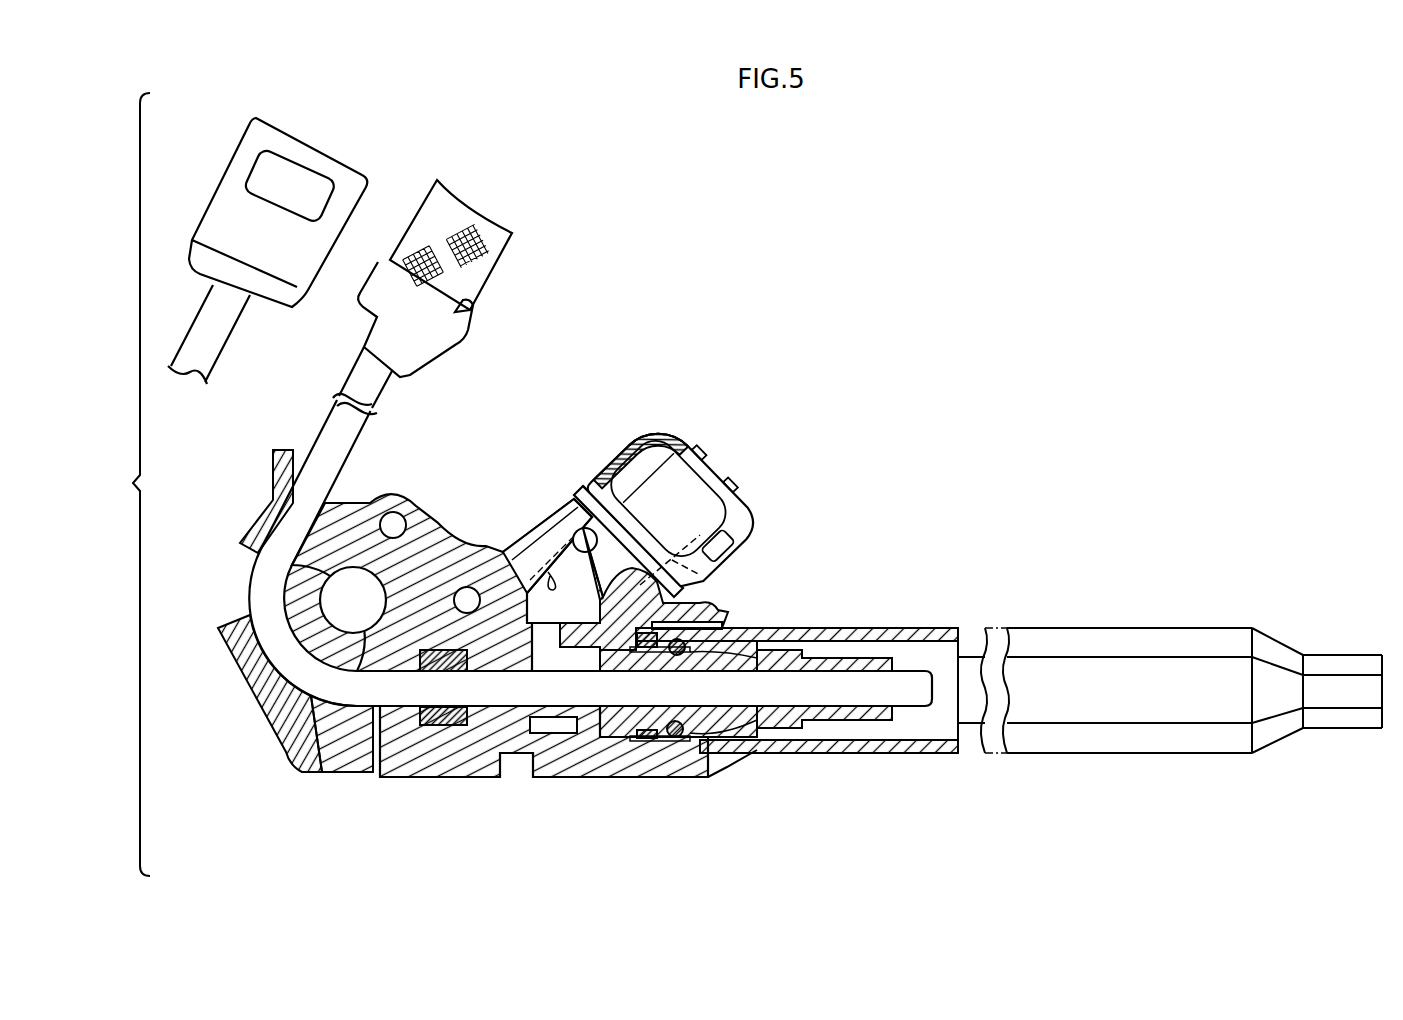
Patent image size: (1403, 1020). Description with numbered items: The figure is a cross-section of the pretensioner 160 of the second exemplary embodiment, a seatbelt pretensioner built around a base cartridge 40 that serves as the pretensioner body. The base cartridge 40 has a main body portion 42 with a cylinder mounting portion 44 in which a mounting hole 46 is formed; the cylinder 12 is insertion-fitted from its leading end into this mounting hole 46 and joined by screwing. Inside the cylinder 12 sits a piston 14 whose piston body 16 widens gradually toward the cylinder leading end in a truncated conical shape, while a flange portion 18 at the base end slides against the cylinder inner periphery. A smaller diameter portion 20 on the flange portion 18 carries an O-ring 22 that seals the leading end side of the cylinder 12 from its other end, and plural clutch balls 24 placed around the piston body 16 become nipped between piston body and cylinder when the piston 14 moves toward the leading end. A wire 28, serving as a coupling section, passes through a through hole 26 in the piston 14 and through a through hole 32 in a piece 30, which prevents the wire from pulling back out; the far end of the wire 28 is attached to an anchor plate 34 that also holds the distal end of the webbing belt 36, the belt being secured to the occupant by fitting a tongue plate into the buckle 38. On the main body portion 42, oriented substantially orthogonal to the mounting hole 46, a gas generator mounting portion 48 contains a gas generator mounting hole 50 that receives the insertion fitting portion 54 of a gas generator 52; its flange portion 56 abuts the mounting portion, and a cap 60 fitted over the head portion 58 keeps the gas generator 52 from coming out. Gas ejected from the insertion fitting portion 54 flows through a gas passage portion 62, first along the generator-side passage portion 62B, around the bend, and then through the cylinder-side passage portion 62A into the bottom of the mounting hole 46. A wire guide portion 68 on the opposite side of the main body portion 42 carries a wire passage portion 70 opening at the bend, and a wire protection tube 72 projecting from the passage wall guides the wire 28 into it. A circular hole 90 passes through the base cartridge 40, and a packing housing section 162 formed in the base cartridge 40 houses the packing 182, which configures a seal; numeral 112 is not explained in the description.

The cylinder 12 is at (968, 627).
The piston 14 is at (757, 630).
The piston body 16 is at (766, 756).
The flange portion 18 is at (646, 740).
The smaller diameter portion 20 is at (610, 728).
The O-ring 22 is at (650, 746).
The clutch balls 24 is at (674, 738).
The through hole 26 is at (745, 732).
The wire 28 is at (222, 350).
The piece 30 is at (860, 722).
The through hole 32 is at (848, 668).
The anchor plate 34 is at (470, 318).
The webbing belt 36 is at (492, 253).
The buckle 38 is at (355, 182).
The base cartridge 40 is at (474, 503).
The main body portion 42 is at (555, 722).
The cylinder mounting portion 44 is at (710, 603).
The mounting hole 46 is at (708, 735).
The gas generator mounting portion 48 is at (580, 533).
The gas generator mounting hole 50 is at (568, 528).
The gas generator 52 is at (728, 458).
The insertion fitting portion 54 is at (577, 491).
The flange portion 56 is at (583, 482).
The head portion 58 is at (611, 458).
The cap 60 is at (648, 427).
The gas passage portion 62 is at (490, 702).
The cylinder-side passage portion 62A is at (578, 735).
The generator-side passage portion 62B is at (552, 576).
The wire guide portion 68 is at (373, 772).
The wire passage portion 70 is at (450, 745).
The wire protection tube 72 is at (530, 778).
The circular hole 90 is at (350, 568).
The contact pin 112 is at (705, 560).
The pretensioner 160 is at (908, 314).
The packing housing section 162 is at (437, 648).
The packing 182 is at (438, 726).